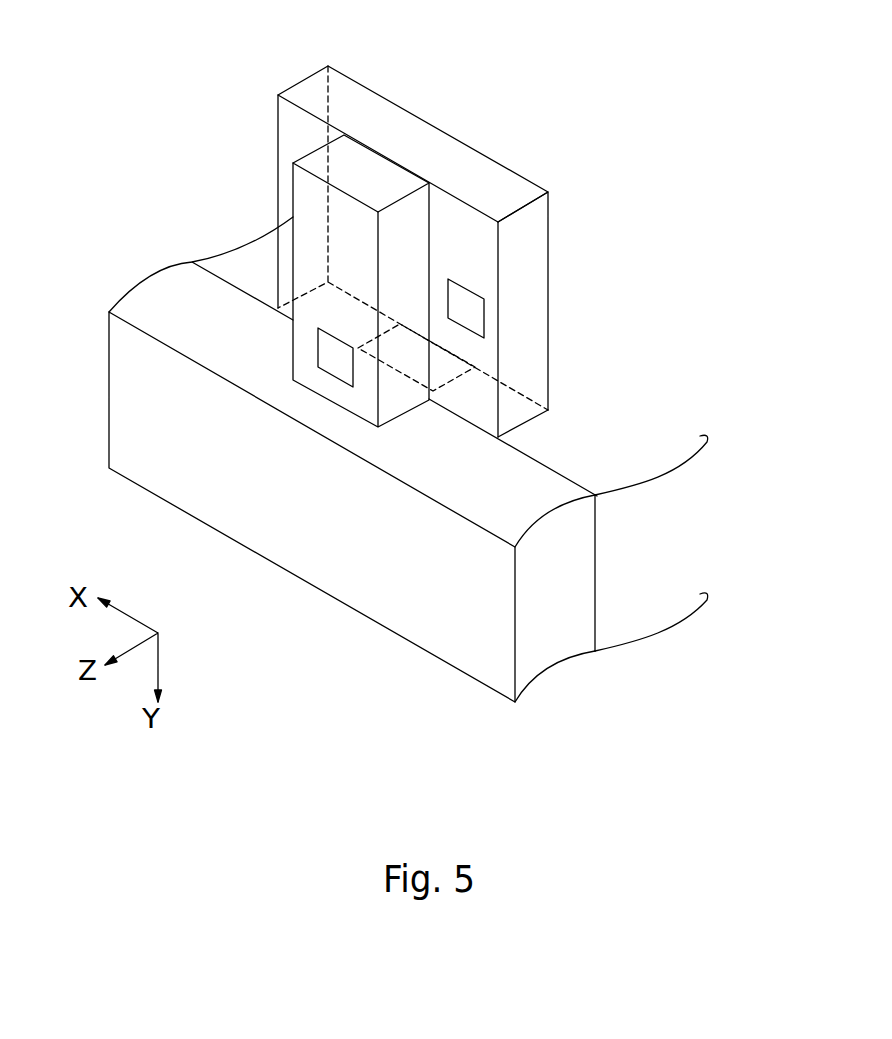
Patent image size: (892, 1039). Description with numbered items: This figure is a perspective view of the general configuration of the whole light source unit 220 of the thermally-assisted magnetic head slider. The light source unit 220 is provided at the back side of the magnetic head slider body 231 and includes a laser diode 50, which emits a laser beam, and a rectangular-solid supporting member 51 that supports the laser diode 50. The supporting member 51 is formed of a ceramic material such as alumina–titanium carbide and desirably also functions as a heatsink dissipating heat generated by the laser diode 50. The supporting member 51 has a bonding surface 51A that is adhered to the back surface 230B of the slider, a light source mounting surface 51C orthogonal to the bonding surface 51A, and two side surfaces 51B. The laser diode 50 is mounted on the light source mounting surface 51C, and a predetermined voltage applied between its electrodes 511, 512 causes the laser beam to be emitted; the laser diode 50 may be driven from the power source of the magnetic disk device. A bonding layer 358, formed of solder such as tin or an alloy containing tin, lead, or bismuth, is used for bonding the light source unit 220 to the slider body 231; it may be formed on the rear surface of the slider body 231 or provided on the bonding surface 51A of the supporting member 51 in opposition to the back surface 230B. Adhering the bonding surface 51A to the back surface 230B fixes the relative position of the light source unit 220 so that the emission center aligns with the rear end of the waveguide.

The light source unit 220 is at (172, 25).
The supporting member 51 is at (445, 234).
The laser diode 50 is at (303, 386).
The bonding surface 51A is at (510, 405).
The side surfaces 51B is at (522, 357).
The light source mounting surface 51C is at (470, 238).
The electrode 511 is at (468, 306).
The electrode 512 is at (338, 353).
The bonding layer 358 is at (416, 362).
The magnetic head slider body 231 is at (493, 635).
The back surface 230B is at (618, 475).